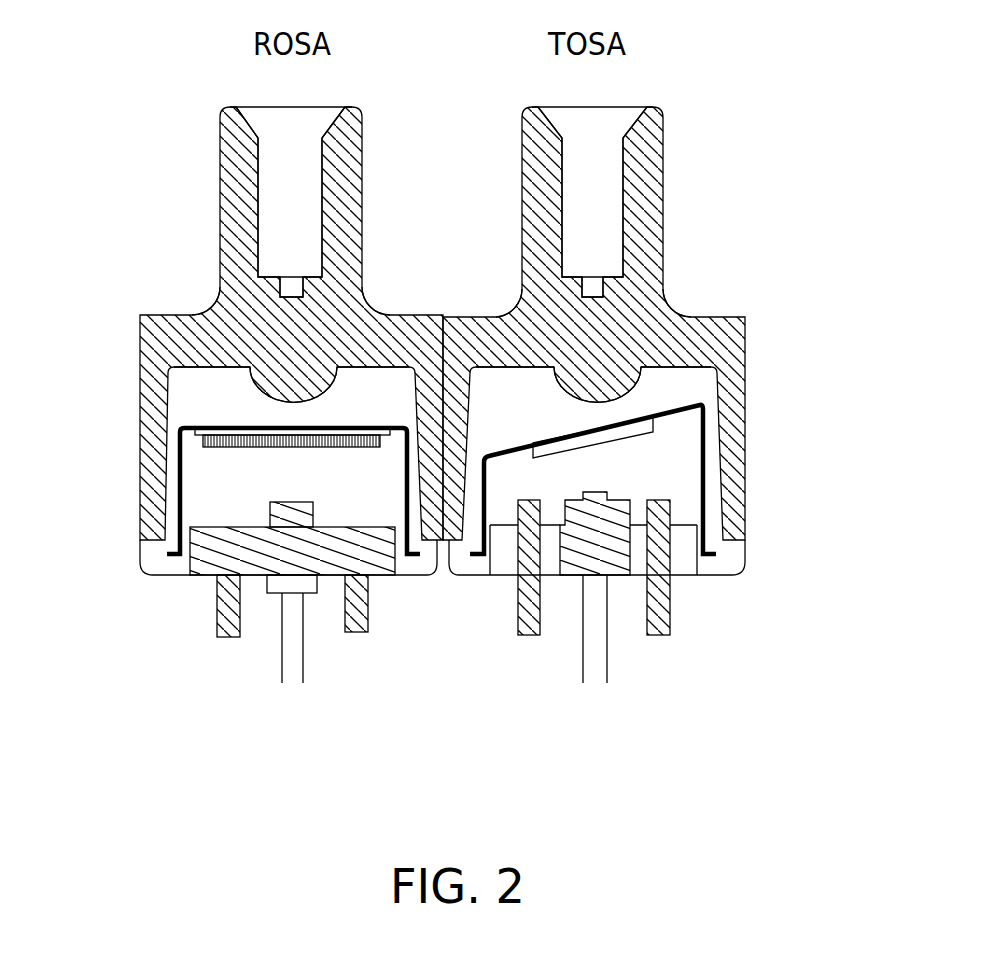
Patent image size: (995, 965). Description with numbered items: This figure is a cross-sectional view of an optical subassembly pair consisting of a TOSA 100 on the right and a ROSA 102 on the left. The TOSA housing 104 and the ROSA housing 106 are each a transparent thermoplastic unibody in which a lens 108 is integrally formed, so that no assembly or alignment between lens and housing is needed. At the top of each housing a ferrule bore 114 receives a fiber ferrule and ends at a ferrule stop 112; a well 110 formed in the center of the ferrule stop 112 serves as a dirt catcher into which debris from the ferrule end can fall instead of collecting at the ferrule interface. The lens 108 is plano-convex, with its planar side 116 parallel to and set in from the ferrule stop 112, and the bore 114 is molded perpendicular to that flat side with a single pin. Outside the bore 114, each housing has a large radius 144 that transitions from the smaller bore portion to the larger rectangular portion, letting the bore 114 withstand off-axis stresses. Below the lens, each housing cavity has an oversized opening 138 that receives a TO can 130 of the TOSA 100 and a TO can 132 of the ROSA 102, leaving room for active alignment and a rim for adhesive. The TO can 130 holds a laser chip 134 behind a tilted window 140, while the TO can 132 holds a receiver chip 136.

The TOSA 100 is at (677, 96).
The ROSA 102 is at (204, 98).
The TOSA housing 104 is at (662, 268).
The ROSA housing 106 is at (160, 330).
The integrally formed lens 108 is at (575, 376).
The well 110 is at (293, 283).
The ferrule stop 112 is at (312, 277).
The ferrule bore 114 is at (575, 177).
The planar side 116 is at (288, 377).
The TO can 130 is at (710, 483).
The TO can 132 is at (183, 495).
The optoelectronic chip 134 is at (607, 488).
The optoelectronic chip 136 is at (290, 500).
The opening 138 is at (140, 547).
The tilted window 140 is at (617, 418).
The large radius 144 is at (213, 286).